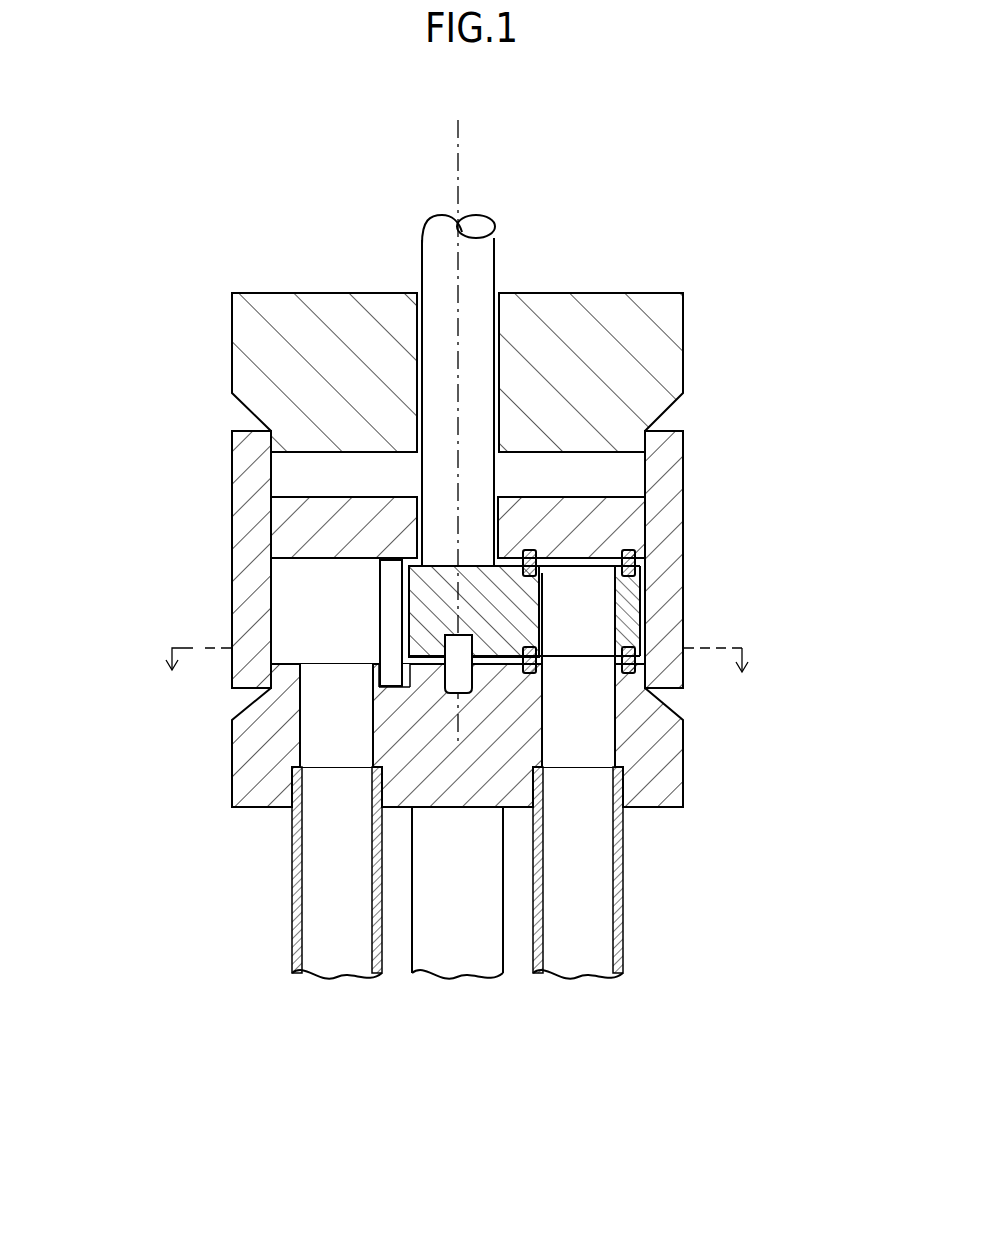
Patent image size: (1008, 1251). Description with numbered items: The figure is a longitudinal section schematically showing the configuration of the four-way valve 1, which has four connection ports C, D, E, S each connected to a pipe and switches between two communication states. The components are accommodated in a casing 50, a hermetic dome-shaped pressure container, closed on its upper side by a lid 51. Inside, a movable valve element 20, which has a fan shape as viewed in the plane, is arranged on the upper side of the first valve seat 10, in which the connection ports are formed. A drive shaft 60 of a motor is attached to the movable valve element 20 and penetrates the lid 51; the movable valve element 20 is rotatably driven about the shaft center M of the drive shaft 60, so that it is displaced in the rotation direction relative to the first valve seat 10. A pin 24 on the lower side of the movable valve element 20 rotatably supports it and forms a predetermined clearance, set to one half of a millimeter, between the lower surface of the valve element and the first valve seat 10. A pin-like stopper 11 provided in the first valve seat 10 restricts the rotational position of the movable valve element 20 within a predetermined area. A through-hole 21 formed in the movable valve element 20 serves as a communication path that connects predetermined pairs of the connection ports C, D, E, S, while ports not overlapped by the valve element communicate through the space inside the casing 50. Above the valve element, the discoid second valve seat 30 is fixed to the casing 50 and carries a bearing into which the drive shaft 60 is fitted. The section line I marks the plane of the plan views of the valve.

The four-way valve 1 is at (673, 188).
The first valve seat 10 is at (475, 838).
The stopper 11 is at (388, 587).
The movable valve element 20 is at (342, 649).
The through-hole 21 is at (597, 612).
The pin 24 is at (445, 680).
The second valve seat 30 is at (613, 525).
The casing 50 is at (685, 472).
The lid 51 is at (683, 330).
The drive shaft 60 is at (495, 252).
The shaft center M is at (458, 135).
The connection port S is at (457, 960).
The connection port D is at (457, 958).
The connection port E is at (320, 730).
The connection port C is at (588, 728).
The section line I- I is at (458, 661).